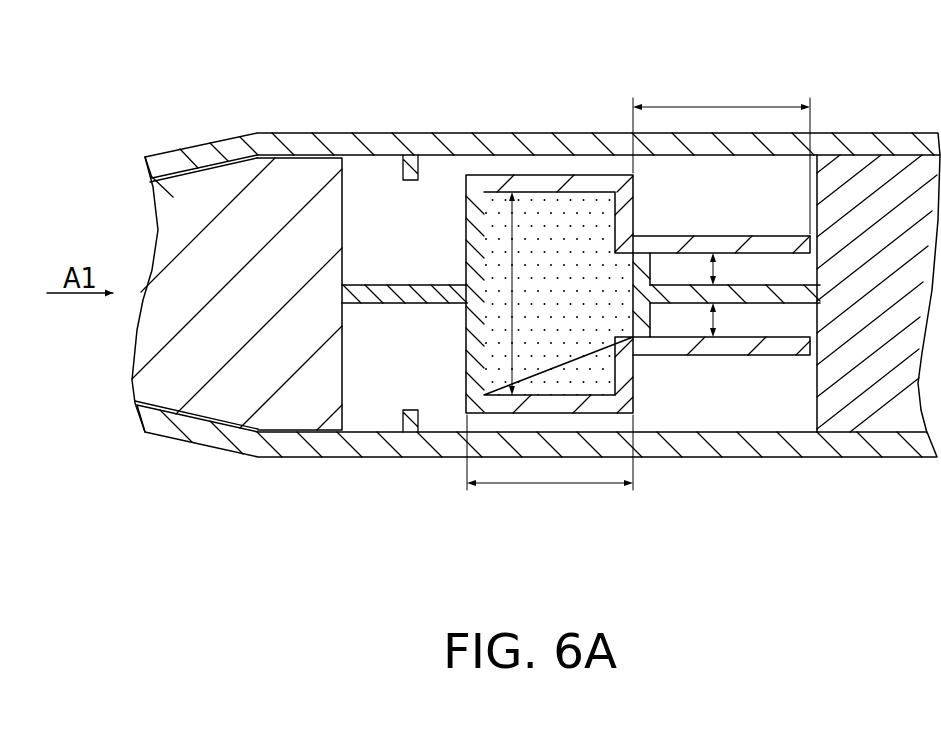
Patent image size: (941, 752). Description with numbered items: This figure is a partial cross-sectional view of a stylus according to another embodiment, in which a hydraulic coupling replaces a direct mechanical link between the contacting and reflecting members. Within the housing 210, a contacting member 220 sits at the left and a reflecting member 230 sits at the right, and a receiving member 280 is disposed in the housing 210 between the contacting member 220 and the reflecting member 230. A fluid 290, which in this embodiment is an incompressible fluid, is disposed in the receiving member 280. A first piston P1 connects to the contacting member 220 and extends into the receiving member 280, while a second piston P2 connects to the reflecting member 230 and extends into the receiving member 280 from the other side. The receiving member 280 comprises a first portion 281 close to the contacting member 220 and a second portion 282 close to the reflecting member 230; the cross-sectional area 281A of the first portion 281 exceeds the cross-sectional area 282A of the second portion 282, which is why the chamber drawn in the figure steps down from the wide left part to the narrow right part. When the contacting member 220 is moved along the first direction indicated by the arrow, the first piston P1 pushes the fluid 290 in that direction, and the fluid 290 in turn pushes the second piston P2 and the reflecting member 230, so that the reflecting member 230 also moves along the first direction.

The housing 210 is at (200, 157).
The contacting member 220 is at (305, 187).
The reflecting member 230 is at (878, 183).
The receiving member 280 is at (487, 183).
The first portion 281 is at (552, 487).
The cross-sectional area of the first portion 281A is at (512, 337).
The second portion 282 is at (722, 107).
The cross-sectional area of the second portion 282A is at (716, 306).
The fluid 290 is at (565, 230).
The first piston P1 is at (410, 297).
The second piston P2 is at (687, 293).